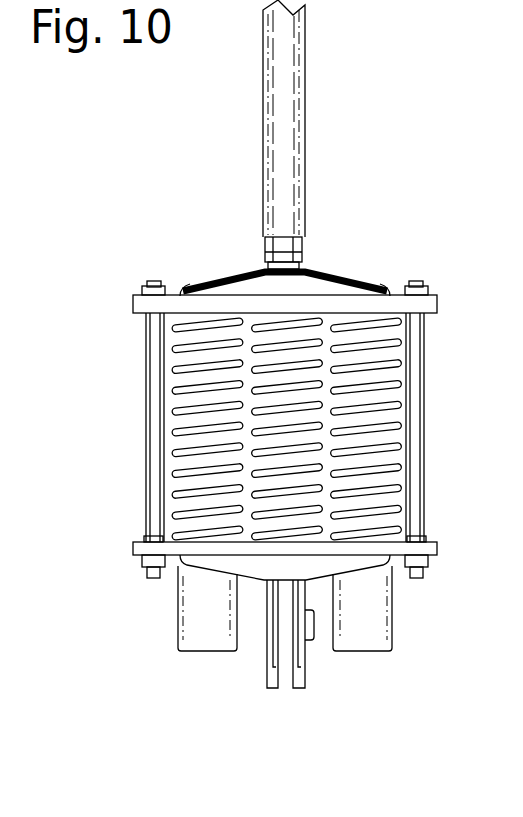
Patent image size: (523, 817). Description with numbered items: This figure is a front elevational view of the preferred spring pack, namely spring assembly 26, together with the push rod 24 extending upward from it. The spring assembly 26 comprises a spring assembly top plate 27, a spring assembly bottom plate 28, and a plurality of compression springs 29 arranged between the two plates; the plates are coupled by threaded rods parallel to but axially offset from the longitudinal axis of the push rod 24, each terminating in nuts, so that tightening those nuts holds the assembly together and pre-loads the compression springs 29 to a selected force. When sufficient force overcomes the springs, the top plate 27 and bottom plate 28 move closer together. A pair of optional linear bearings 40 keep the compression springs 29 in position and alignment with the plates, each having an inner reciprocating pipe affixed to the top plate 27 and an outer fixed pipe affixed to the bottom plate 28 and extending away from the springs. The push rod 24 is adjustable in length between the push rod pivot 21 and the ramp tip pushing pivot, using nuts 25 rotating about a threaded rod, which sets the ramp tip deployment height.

The push rod 24 is at (268, 27).
The nuts 25 is at (266, 251).
The spring assembly top plate 27 is at (141, 312).
The spring assembly 26 is at (142, 431).
The compression springs 29 is at (174, 476).
The spring assembly bottom plate 28 is at (139, 550).
The linear bearings 40 is at (178, 647).
The push rod pivot 21 is at (268, 672).